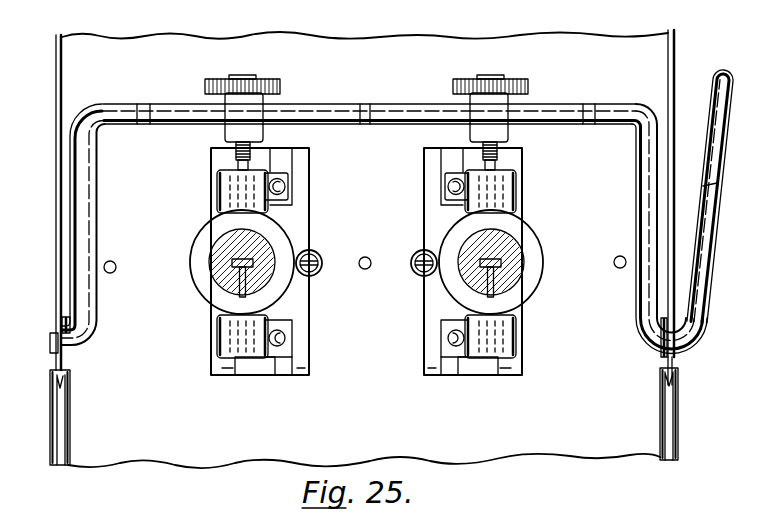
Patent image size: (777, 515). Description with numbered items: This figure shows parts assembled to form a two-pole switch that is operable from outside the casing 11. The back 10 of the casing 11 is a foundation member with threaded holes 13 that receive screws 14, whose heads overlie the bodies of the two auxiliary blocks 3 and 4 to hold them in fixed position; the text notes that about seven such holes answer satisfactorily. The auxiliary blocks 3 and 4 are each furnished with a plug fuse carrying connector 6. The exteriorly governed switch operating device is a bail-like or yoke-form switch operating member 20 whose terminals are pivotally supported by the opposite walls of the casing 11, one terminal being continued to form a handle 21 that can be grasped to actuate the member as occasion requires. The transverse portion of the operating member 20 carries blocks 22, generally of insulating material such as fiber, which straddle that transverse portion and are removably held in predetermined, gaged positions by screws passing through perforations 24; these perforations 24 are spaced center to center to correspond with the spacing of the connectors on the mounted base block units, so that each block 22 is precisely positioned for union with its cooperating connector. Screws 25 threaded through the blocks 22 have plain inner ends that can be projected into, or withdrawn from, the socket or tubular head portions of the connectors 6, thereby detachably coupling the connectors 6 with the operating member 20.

The auxiliary block 3 is at (505, 376).
The auxiliary block 4 is at (297, 376).
The plug fuse carrying connector 6 is at (513, 193).
The back 10 is at (494, 33).
The casing 11 is at (56, 250).
The threaded hole 13 is at (116, 269).
The screw 14 is at (411, 253).
The switch operating member 20 is at (420, 100).
The handle 21 is at (714, 248).
The block 22 is at (255, 108).
The perforation 24 is at (143, 106).
The screw 25 is at (252, 148).